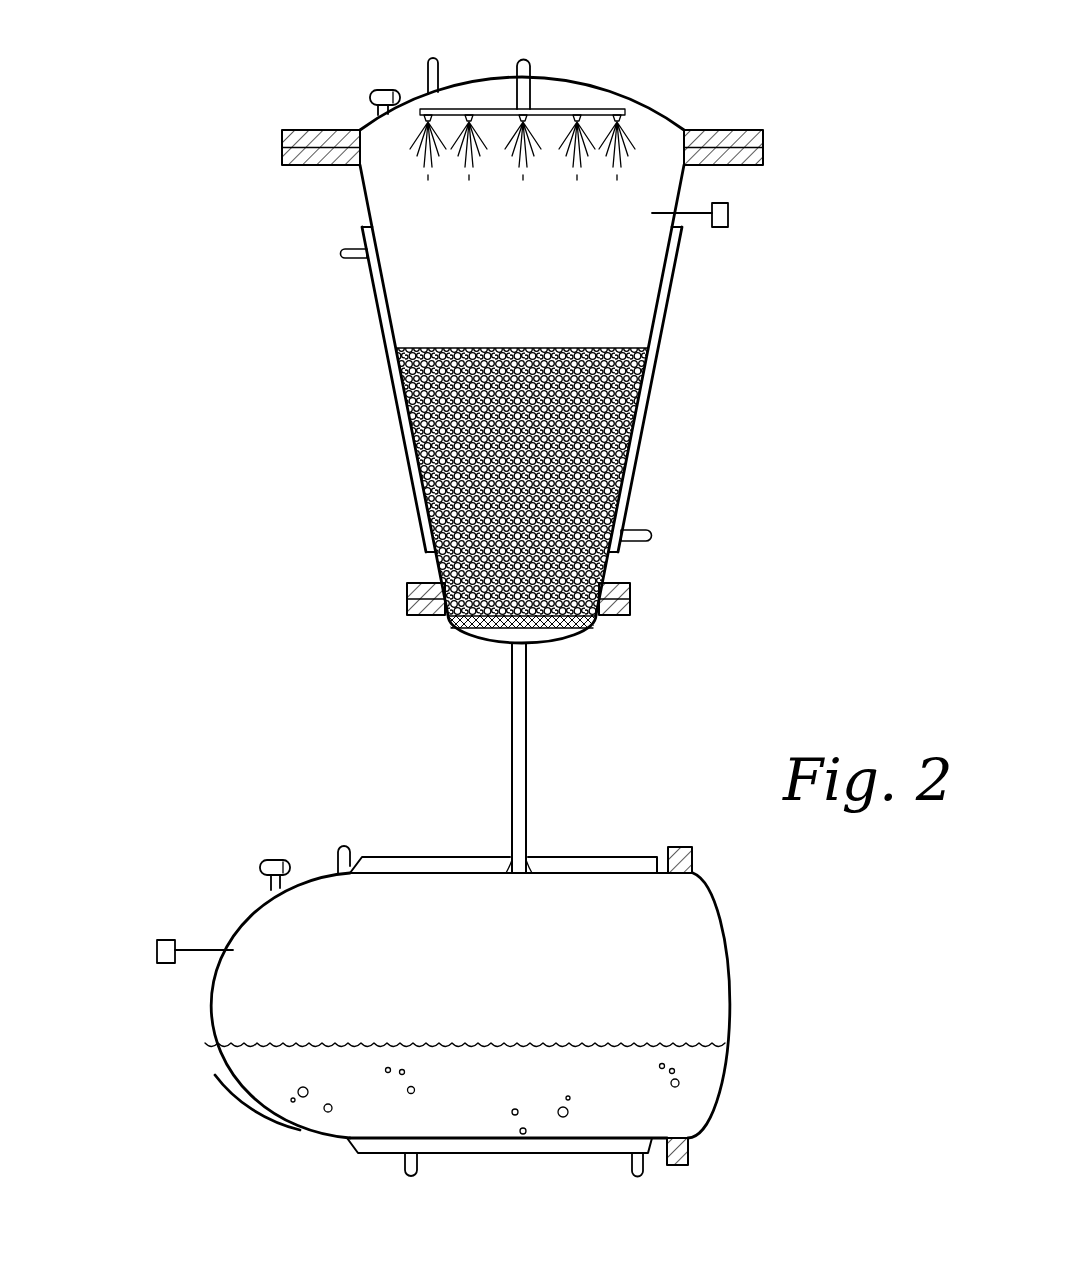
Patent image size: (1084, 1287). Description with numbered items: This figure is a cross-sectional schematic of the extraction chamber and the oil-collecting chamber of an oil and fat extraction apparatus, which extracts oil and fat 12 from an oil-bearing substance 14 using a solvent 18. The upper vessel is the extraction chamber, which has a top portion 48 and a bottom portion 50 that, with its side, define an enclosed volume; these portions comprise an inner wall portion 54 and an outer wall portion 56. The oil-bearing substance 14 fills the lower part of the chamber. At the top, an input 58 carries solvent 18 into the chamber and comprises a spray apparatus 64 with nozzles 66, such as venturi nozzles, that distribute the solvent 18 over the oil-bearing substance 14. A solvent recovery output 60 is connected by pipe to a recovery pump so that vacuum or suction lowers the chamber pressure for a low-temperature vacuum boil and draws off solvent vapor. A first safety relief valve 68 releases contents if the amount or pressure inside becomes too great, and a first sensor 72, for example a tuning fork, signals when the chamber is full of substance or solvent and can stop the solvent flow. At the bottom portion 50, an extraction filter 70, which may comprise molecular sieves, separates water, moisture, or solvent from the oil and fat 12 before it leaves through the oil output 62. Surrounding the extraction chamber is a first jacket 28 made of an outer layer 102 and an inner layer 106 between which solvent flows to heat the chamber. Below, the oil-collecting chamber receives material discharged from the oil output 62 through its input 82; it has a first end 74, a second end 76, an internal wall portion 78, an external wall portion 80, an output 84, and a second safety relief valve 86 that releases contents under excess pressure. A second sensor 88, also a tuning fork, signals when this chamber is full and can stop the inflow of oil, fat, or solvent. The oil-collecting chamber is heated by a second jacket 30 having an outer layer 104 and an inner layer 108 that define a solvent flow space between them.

The oil and fat 12 is at (557, 1055).
The oil-bearing substance 14 is at (497, 346).
The solvent 18 is at (422, 162).
The first jacket 28 is at (640, 452).
The second jacket 30 is at (622, 856).
The top portion 48 is at (647, 107).
The bottom portion 50 is at (485, 642).
The inner wall portion 54 is at (688, 176).
The outer wall portion 56 is at (680, 186).
The input 58 is at (527, 70).
The solvent recovery output 60 is at (428, 78).
The oil output 62 is at (526, 660).
The spray apparatus 64 is at (558, 108).
The nozzles 66 is at (469, 110).
The first safety relief valve 68 is at (372, 92).
The extraction filter 70 is at (583, 628).
The first sensor 72 is at (722, 216).
The first end 74 is at (733, 1003).
The second end 76 is at (198, 1007).
The internal wall portion 78 is at (237, 1103).
The external wall portion 80 is at (218, 1082).
The input 82 is at (522, 866).
The output 84 is at (342, 848).
The second safety relief valve 86 is at (270, 860).
The second sensor 88 is at (157, 950).
The outer layer 102 is at (667, 328).
The outer layer 104 is at (392, 856).
The inner layer 106 is at (665, 291).
The inner layer 108 is at (420, 878).